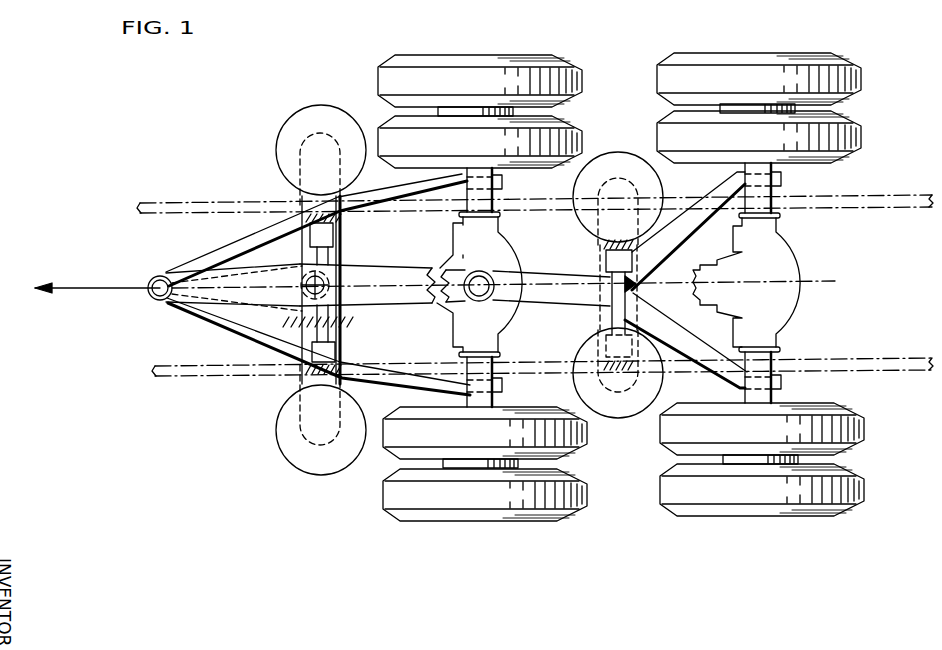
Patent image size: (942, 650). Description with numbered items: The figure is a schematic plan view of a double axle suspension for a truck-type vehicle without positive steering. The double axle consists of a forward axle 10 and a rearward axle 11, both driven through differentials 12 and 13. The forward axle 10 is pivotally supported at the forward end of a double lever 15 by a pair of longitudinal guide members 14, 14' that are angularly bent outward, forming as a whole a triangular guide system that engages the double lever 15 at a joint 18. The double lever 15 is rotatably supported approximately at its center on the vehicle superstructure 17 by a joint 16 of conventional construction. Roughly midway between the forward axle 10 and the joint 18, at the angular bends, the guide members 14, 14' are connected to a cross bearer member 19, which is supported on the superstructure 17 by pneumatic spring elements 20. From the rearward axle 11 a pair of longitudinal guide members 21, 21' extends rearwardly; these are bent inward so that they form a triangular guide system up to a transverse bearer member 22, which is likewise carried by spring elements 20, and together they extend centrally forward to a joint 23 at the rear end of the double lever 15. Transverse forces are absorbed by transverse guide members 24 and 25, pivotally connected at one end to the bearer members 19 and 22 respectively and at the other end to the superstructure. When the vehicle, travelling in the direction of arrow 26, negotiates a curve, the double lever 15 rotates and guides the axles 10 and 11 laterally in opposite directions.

The forward axle 10 is at (497, 401).
The rearward axle 11 is at (778, 395).
The differential 12 is at (505, 262).
The differential 13 is at (785, 266).
The longitudinal guide member 14 is at (318, 346).
The longitudinal guide member 14' is at (316, 230).
The double lever 15 is at (200, 272).
The joint 16 is at (333, 276).
The vehicle superstructure 17 is at (152, 203).
The joint 18 is at (150, 296).
The cross bearer member 19 is at (308, 413).
The pneumatic spring elements 20 is at (302, 125).
The longitudinal guide member 21 is at (686, 340).
The longitudinal guide member 21' is at (688, 231).
The transverse bearer member 22 is at (600, 351).
The joint 23 is at (466, 280).
The transverse guide member 24 is at (318, 334).
The transverse guide member 25 is at (610, 320).
The arrow 26 is at (84, 289).